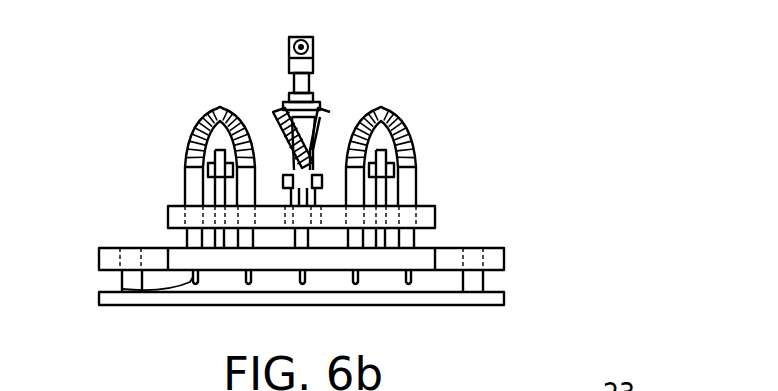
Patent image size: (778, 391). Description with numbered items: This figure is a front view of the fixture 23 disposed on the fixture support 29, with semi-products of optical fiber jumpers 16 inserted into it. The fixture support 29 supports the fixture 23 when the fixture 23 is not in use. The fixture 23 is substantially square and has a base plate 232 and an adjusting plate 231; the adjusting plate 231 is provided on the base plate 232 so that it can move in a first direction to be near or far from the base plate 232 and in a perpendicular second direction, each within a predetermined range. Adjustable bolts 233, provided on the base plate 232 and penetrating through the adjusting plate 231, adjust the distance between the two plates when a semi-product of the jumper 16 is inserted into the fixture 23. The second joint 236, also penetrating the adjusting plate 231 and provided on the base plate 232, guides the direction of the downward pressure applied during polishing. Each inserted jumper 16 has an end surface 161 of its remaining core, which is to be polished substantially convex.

The fixture 23 is at (520, 62).
The semi-product of the jumper 16 is at (201, 111).
The adjustable bolt 233 is at (187, 168).
The second joint 236 is at (313, 47).
The adjusting plate 231 is at (435, 217).
The base plate 232 is at (504, 258).
The fixture support 29 is at (504, 297).
The end surface 161 is at (128, 289).